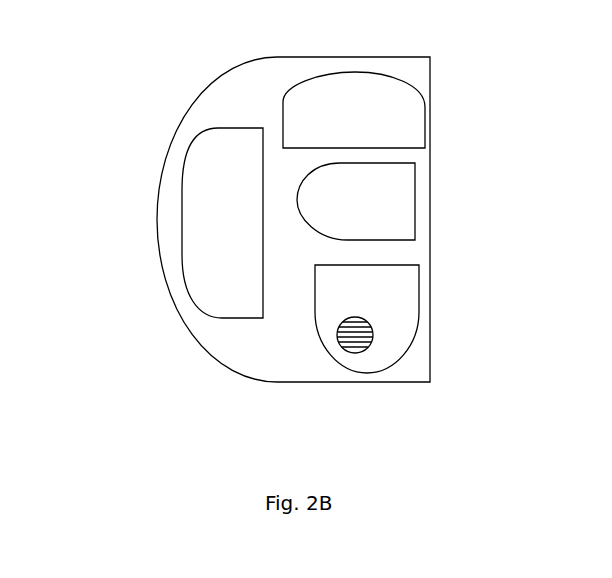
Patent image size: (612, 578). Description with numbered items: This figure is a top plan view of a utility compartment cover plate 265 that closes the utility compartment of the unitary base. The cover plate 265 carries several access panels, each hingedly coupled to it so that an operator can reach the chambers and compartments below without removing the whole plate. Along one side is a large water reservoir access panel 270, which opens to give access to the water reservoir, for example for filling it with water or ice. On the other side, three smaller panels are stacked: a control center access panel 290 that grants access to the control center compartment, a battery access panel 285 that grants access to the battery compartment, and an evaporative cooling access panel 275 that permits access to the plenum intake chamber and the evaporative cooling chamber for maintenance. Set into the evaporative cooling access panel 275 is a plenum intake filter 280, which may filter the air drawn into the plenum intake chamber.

The utility compartment cover plate 265 is at (403, 57).
The water reservoir access panel 270 is at (197, 228).
The evaporative cooling access panel 275 is at (407, 303).
The plenum intake filter 280 is at (363, 347).
The battery access panel 285 is at (405, 200).
The control center access panel 290 is at (408, 117).